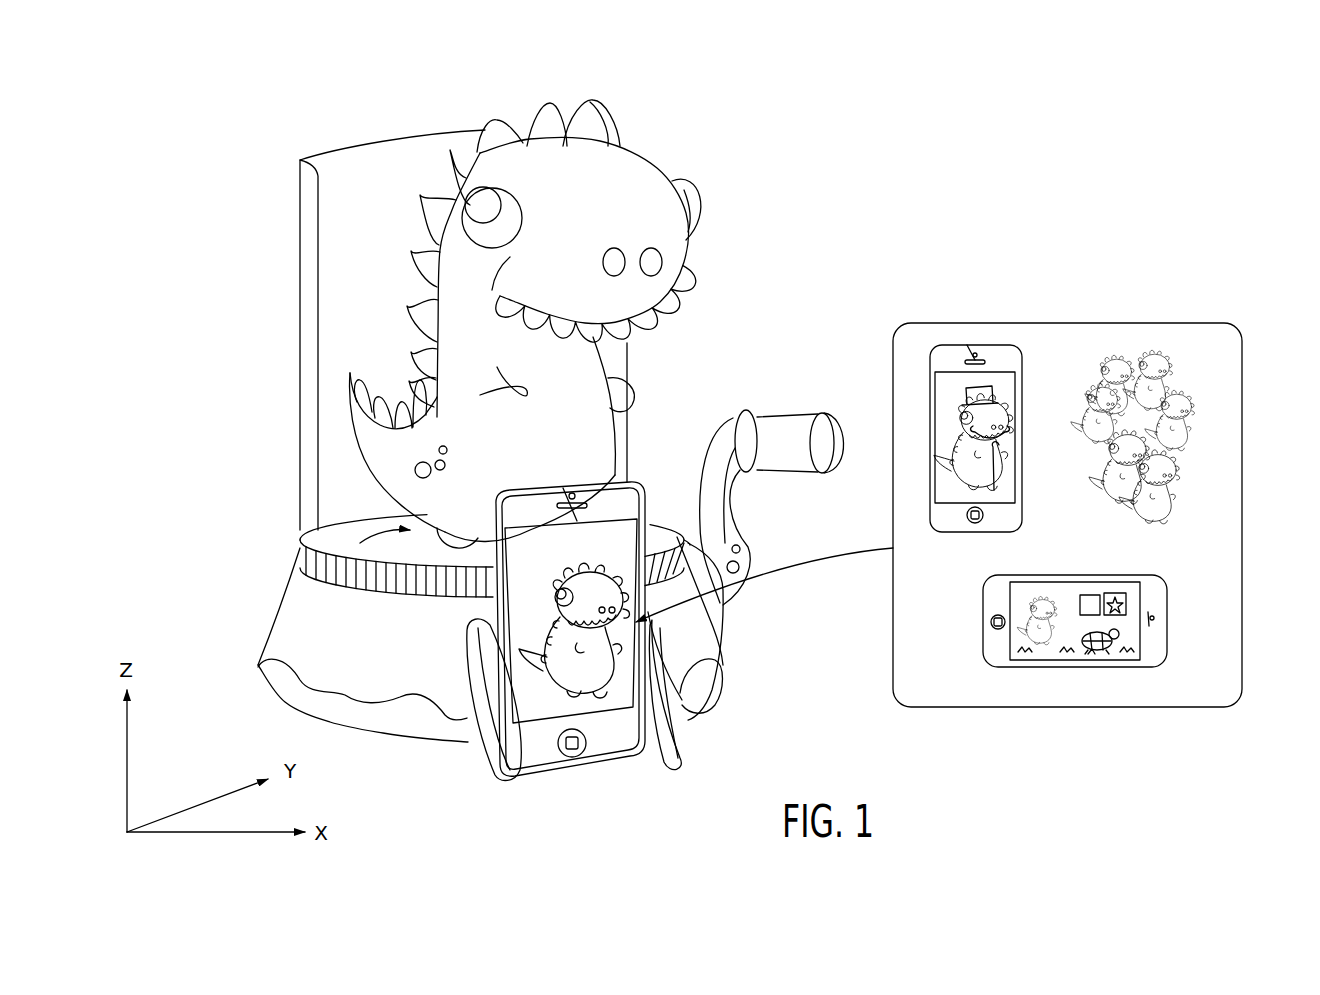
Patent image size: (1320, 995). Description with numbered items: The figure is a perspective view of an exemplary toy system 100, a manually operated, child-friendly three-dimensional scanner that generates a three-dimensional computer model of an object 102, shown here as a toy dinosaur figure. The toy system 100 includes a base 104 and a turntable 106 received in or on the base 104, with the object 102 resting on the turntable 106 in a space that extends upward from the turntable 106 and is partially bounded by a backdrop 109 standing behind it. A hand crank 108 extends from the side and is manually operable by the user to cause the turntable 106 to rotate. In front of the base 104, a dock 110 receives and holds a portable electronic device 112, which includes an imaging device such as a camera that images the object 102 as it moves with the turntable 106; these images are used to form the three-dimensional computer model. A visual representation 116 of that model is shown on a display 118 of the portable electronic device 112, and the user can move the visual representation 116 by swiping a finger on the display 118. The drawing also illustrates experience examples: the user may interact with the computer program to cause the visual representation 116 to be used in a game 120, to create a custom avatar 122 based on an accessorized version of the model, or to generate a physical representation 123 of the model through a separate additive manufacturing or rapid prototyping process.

The toy system 100 is at (467, 80).
The object 102 is at (658, 150).
The base 104 is at (295, 632).
The turntable 106 is at (322, 535).
The hand crank 108 is at (787, 417).
The backdrop 109 is at (350, 246).
The dock 110 is at (456, 700).
The portable electronic device 112 is at (604, 637).
The visual representation 116 is at (613, 690).
The display 118 is at (609, 612).
The game 120 is at (1110, 695).
The custom avatar 122 is at (914, 402).
The 3D print example 123 is at (1226, 436).